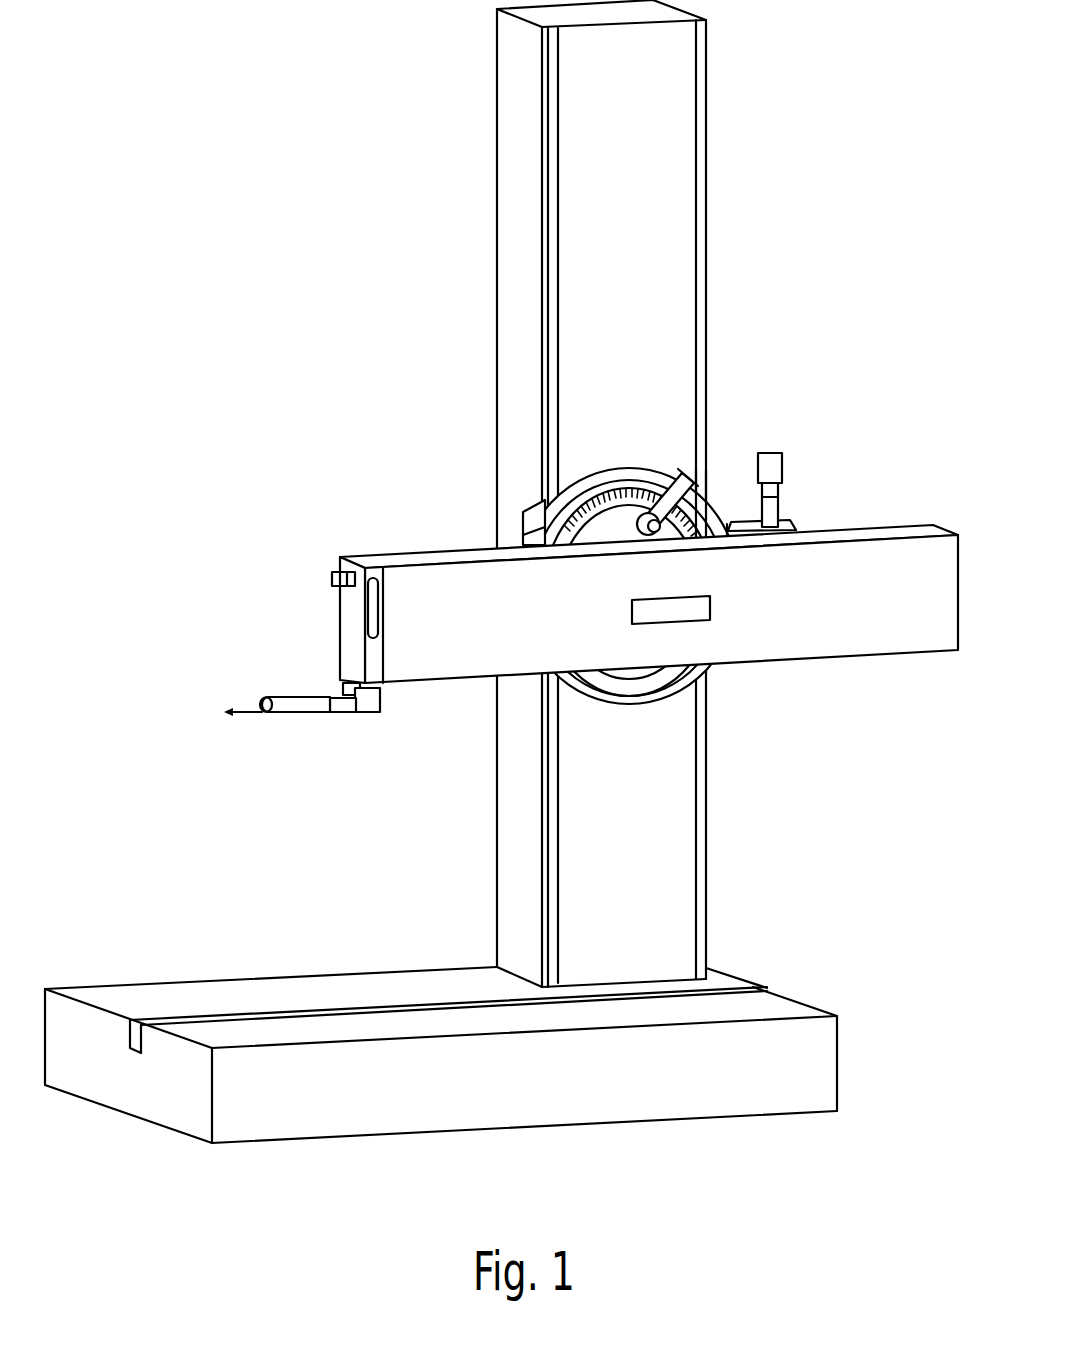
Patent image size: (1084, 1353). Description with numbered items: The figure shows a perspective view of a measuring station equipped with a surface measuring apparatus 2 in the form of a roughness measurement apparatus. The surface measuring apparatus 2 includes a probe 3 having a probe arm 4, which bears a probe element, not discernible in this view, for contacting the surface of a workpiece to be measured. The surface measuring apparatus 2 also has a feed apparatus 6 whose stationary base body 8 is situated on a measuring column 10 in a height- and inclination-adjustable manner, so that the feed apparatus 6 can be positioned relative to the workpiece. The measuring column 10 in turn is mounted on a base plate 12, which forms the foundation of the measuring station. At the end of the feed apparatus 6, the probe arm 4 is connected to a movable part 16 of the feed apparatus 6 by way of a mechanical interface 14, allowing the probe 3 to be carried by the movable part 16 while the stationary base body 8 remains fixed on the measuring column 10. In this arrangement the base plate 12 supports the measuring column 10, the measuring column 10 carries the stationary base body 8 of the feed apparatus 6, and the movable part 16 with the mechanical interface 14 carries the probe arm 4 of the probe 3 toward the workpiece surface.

The surface measuring apparatus 2 is at (501, 571).
The probe 3 is at (275, 652).
The probe arm 4 is at (238, 708).
The feed apparatus 6 is at (645, 585).
The stationary base body 8 is at (818, 636).
The measuring column 10 is at (670, 297).
The base plate 12 is at (300, 988).
The mechanical interface 14 is at (262, 748).
The movable part 16 is at (365, 708).